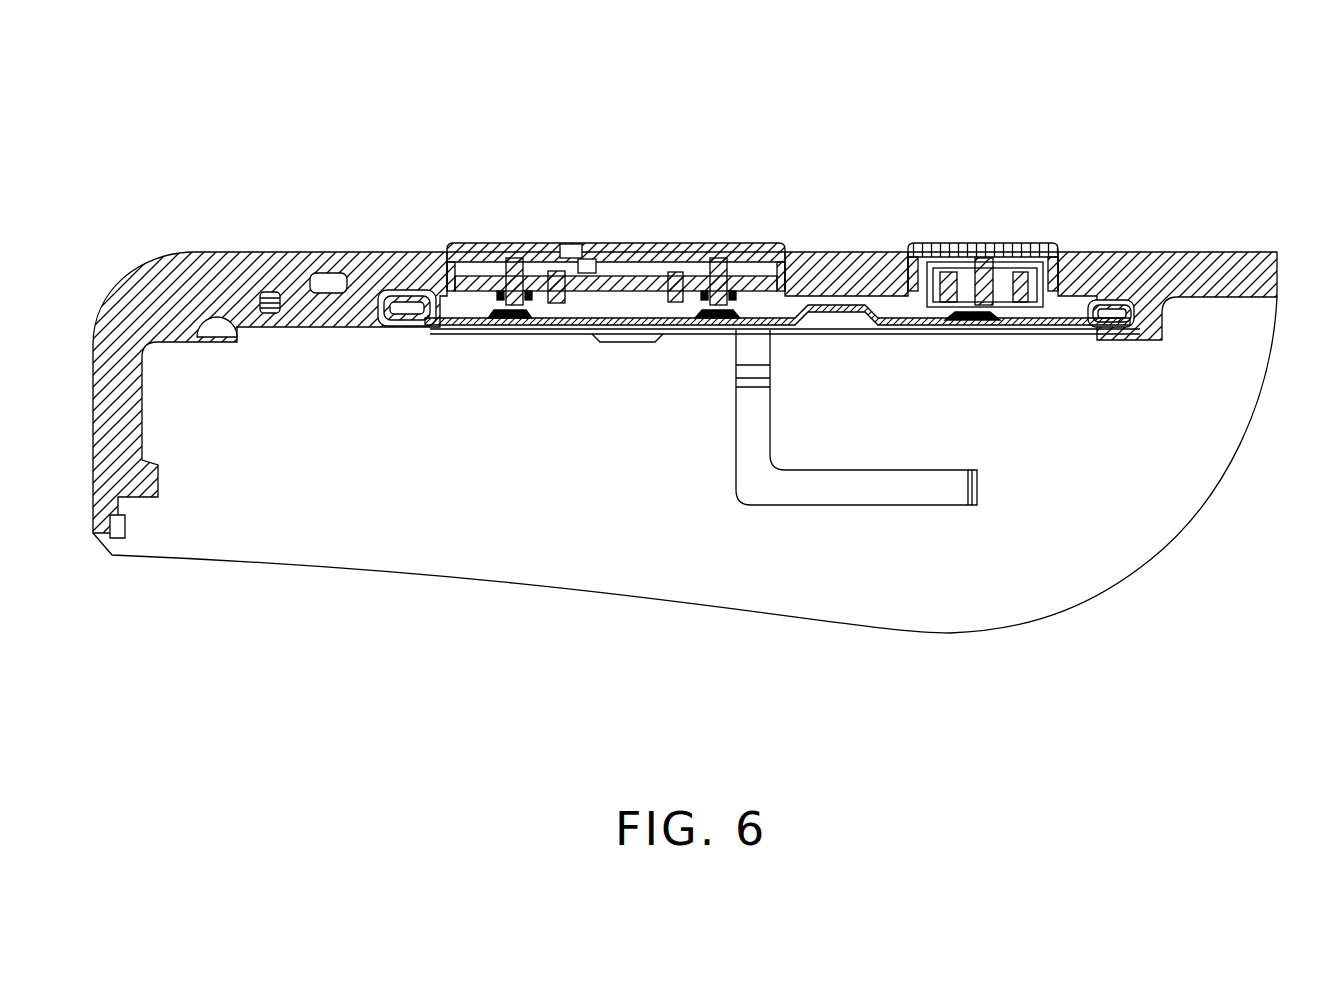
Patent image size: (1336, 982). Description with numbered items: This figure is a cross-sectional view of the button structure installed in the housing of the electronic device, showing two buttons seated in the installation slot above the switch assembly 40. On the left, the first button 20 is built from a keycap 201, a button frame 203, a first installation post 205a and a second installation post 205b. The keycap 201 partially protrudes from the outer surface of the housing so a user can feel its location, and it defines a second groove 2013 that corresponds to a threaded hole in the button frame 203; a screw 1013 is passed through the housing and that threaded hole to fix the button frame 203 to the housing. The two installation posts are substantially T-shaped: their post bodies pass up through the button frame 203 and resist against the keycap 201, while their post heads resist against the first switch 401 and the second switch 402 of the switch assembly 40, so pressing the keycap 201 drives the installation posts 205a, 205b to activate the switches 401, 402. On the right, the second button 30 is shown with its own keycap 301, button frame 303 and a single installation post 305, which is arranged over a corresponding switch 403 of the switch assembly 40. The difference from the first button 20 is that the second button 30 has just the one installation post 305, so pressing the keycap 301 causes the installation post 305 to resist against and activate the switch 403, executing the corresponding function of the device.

The first button 20 is at (579, 177).
The second button 30 is at (1015, 189).
The switch assembly 40 is at (879, 490).
The keycap 201 is at (512, 243).
The button frame 203 is at (458, 242).
The first installation post 205a is at (538, 243).
The second installation post 205b is at (730, 243).
The second groove 2013 is at (568, 243).
The screw 1013 is at (587, 243).
The keycap 301 is at (938, 243).
The button frame 303 is at (948, 243).
The installation post 305 is at (995, 243).
The first switch 401 is at (518, 322).
The second switch 402 is at (715, 318).
The switch 403 is at (1007, 323).